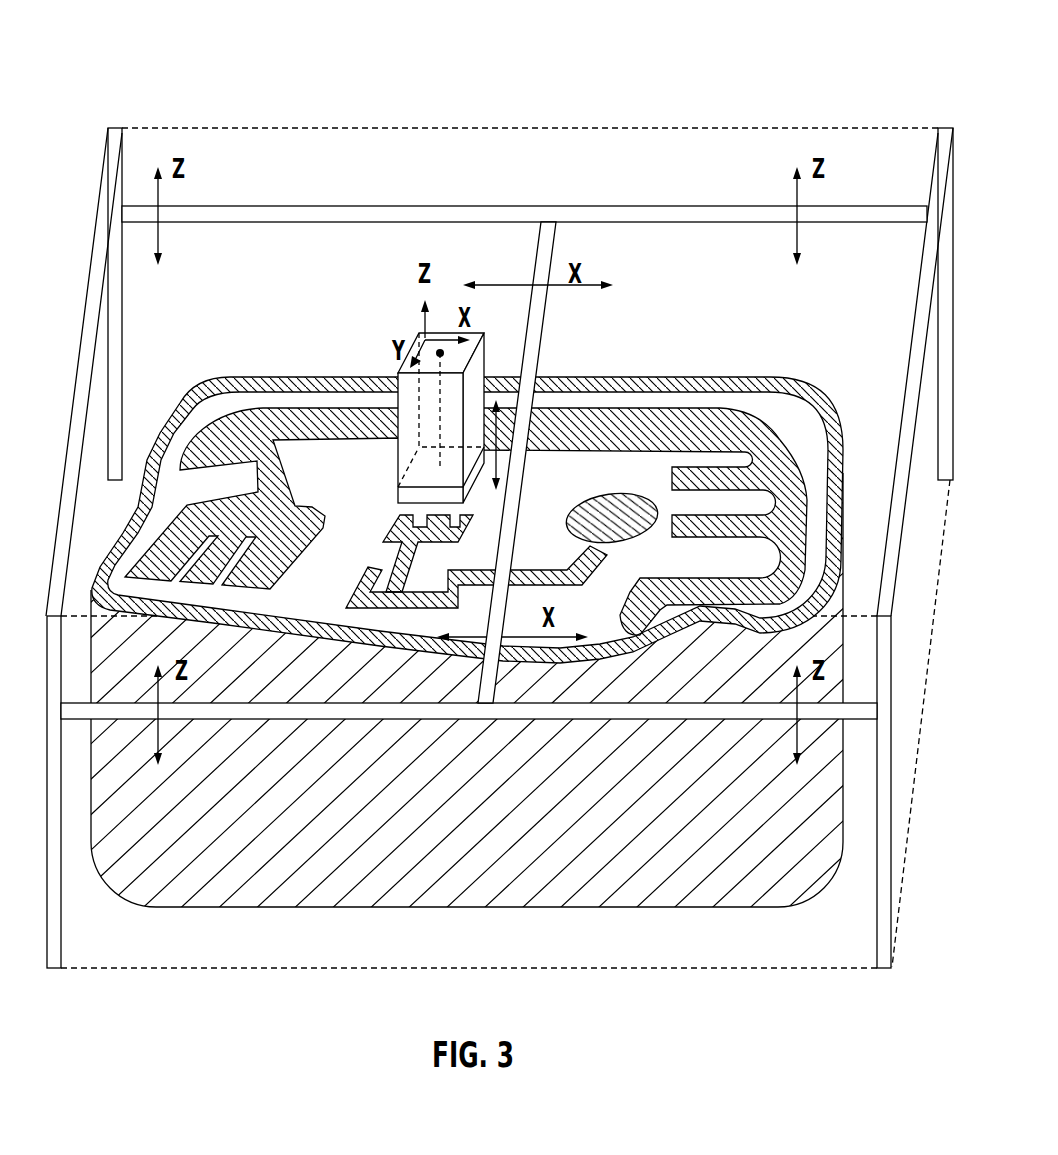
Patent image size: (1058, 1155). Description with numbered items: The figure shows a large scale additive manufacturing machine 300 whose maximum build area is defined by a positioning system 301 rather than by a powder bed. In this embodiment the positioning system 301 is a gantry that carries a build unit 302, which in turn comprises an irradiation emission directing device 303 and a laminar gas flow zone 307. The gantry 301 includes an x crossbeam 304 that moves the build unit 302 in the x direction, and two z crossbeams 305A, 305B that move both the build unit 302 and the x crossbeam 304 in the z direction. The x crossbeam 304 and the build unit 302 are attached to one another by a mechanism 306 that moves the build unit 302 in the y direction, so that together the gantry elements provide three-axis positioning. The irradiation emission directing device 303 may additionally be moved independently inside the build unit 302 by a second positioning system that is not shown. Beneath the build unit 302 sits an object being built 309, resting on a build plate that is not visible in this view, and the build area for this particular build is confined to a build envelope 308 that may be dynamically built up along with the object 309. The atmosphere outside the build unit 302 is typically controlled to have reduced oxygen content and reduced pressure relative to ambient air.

The large scale additive manufacturing machine 300 is at (516, 92).
The positioning system 301 is at (120, 128).
The build unit 302 is at (416, 358).
The irradiation emission directing device 303 is at (445, 352).
The x crossbeam 304 is at (545, 322).
The z crossbeam 305A is at (292, 207).
The z crossbeam 305B is at (257, 719).
The mechanism 306 is at (505, 448).
The laminar gas flow zone 307 is at (418, 496).
The build envelope 308 is at (793, 380).
The object being built 309 is at (813, 490).